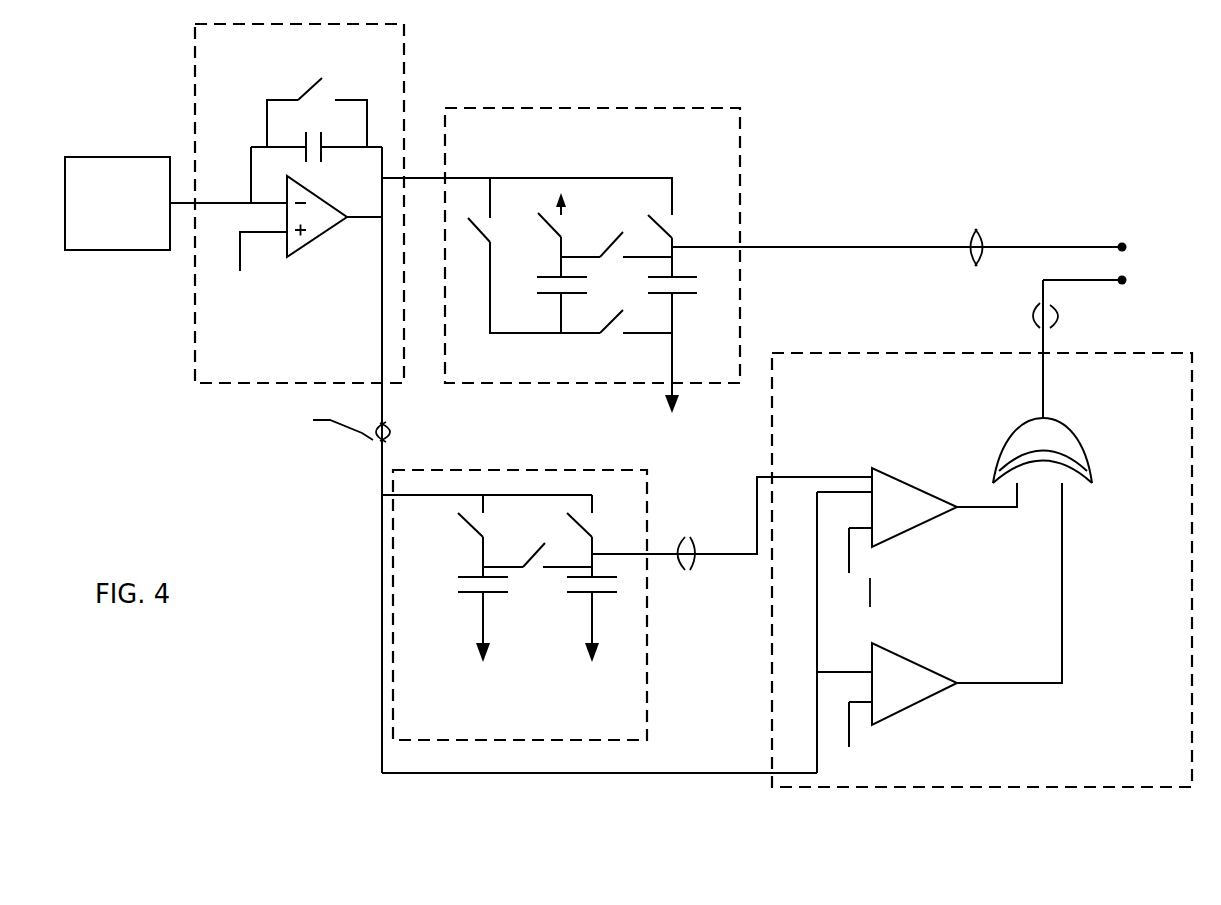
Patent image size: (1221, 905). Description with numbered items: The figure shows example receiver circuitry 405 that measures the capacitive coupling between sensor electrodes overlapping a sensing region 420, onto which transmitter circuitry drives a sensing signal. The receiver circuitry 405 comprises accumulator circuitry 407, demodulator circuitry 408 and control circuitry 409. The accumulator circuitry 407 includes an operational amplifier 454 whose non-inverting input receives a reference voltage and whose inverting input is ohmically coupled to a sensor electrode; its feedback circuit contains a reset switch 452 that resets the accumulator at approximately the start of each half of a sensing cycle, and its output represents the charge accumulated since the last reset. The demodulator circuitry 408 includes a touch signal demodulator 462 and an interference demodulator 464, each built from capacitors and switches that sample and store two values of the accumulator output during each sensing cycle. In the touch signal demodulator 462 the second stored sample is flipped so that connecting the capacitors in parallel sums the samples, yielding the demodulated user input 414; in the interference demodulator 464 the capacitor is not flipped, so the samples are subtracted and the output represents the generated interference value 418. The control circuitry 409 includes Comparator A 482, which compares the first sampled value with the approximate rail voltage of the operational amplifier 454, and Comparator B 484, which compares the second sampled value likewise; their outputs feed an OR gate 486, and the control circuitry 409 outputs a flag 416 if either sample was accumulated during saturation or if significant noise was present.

The receiver circuitry 405 is at (1207, 792).
The accumulator circuitry 407 is at (409, 97).
The demodulator circuitry 408 is at (441, 367).
The control circuitry 409 is at (1112, 764).
The demodulated user input 414 is at (978, 230).
The flag 416 is at (1027, 325).
The generated interference value 418 is at (706, 566).
The sensing region 420 is at (131, 231).
The reset switch 452 is at (329, 80).
The operational amplifier 454 is at (330, 242).
The touch signal demodulator 462 is at (607, 161).
The interference demodulator 464 is at (537, 732).
The Comparator A 482 is at (923, 486).
The Comparator B 484 is at (945, 671).
The OR gate 486 is at (1055, 418).